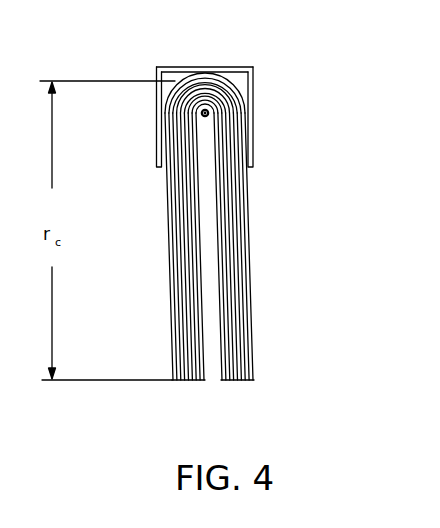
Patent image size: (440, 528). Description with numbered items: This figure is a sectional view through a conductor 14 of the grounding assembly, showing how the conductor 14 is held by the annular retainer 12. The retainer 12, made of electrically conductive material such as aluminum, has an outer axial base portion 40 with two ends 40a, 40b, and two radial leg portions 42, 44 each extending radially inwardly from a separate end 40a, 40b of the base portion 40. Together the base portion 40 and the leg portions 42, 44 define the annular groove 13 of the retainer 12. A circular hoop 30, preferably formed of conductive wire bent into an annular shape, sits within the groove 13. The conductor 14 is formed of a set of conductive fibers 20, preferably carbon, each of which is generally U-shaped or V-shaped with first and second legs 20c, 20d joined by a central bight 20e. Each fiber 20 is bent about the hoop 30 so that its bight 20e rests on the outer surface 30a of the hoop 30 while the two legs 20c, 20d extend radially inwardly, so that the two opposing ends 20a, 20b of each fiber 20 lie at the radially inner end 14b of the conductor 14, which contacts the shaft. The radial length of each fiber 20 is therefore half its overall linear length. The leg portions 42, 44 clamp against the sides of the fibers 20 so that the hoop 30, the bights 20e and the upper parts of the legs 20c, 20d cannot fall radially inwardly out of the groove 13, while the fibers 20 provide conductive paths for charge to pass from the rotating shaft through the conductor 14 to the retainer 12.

The annular retainer 12 is at (302, 88).
The annular groove 13 is at (240, 79).
The conductor 14 is at (300, 322).
The radially inner end of conductor 14b is at (253, 370).
The conductive fiber 20 is at (250, 213).
The first end of conductive fiber 20a is at (230, 381).
The second end of conductive fiber 20b is at (197, 381).
The first leg of conductive fiber 20c is at (230, 195).
The second leg of conductive fiber 20d is at (173, 182).
The central bight of conductive fiber 20e is at (193, 80).
The circular hoop 30 is at (213, 122).
The outer surface of hoop 30a is at (206, 108).
The outer axial base portion 40 is at (178, 62).
The first end of base portion 40a is at (253, 68).
The second end of base portion 40b is at (157, 67).
The radial leg portion 42 is at (258, 108).
The radial leg portion 44 is at (153, 125).